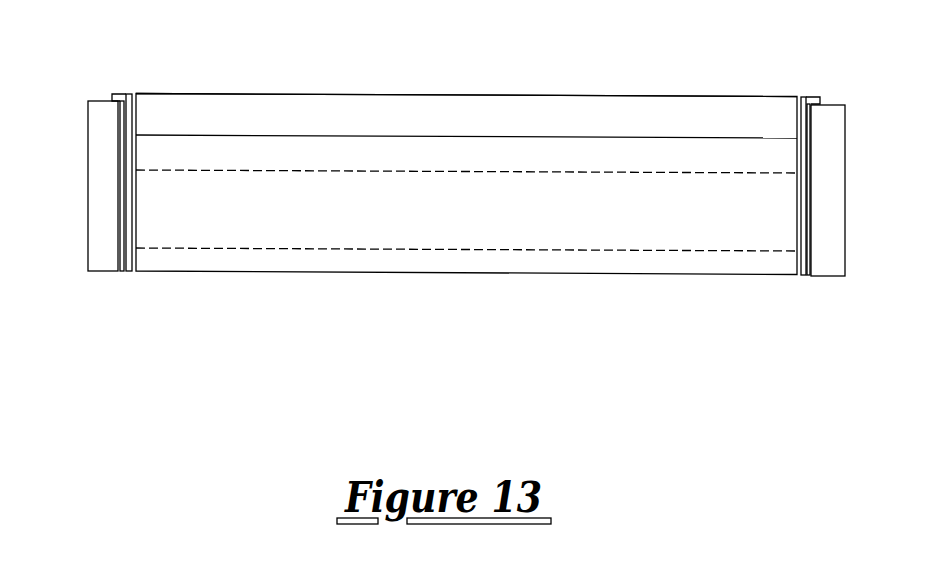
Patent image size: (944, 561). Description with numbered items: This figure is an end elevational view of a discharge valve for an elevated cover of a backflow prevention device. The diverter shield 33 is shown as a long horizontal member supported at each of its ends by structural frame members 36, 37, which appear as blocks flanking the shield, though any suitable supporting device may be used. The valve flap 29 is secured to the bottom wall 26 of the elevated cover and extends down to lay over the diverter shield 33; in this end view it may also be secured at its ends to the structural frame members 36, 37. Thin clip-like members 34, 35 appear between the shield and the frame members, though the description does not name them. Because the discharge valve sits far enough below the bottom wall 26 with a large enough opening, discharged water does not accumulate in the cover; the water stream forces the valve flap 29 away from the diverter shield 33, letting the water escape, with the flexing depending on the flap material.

The bottom wall 26 is at (585, 121).
The valve flap 29 is at (467, 224).
The diverter shield 33 is at (535, 274).
The left retaining clip 34 is at (132, 115).
The right retaining clip 35 is at (797, 118).
The structural frame member 36 is at (95, 117).
The structural frame member 37 is at (830, 208).